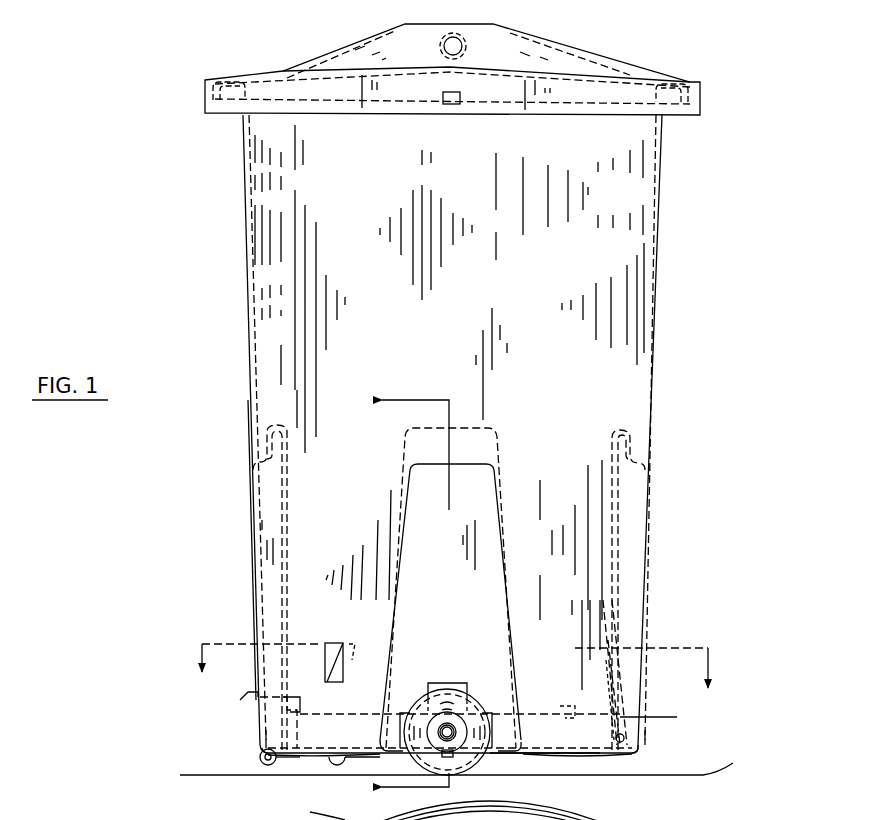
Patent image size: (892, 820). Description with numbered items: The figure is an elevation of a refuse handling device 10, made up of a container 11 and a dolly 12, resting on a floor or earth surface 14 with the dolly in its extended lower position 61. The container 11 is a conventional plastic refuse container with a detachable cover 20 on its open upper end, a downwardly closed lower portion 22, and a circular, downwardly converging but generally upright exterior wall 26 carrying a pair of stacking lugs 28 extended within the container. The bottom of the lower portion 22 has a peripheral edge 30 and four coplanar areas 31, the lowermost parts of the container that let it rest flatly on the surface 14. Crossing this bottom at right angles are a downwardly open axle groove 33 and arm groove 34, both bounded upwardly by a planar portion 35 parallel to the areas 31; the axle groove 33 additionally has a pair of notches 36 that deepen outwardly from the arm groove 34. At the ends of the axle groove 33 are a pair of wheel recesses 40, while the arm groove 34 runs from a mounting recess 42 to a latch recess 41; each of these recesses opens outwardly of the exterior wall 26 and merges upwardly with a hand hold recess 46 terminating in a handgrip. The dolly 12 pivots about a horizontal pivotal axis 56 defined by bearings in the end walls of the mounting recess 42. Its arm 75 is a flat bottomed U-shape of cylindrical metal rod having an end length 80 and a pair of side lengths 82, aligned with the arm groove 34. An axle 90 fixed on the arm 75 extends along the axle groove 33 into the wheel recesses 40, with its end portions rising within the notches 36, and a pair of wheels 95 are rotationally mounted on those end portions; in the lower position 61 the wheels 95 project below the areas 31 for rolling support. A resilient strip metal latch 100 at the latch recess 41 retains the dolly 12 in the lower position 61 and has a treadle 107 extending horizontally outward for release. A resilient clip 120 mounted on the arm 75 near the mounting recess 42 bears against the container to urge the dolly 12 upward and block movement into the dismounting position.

The device for handling refuse 10 is at (198, 413).
The container 11 is at (670, 207).
The dolly 12 is at (540, 762).
The floor or earth surface 14 is at (472, 765).
The detachable cover 20 is at (590, 66).
The lower portion 22 is at (645, 735).
The exterior wall 26 is at (250, 538).
The stacking lugs 28 is at (345, 640).
The peripheral edge 30 is at (262, 748).
The coplanar areas 31 is at (348, 752).
The axle groove 33 is at (492, 760).
The arm groove 34 is at (558, 755).
The planar portion 35 is at (460, 702).
The notches 36 is at (452, 687).
The wheel recesses 40 is at (398, 732).
The latch recess 41 is at (278, 724).
The mounting recess 42 is at (618, 679).
The hand hold recess 46 is at (275, 470).
The pivotal axis 56 is at (653, 718).
The lower position 61 is at (283, 766).
The arm 75 is at (322, 762).
The end length 80 is at (262, 762).
The side lengths 82 is at (377, 758).
The axle 90 is at (452, 728).
The wheels 95 is at (460, 770).
The latch 100 is at (305, 702).
The treadle 107 is at (248, 692).
The resilient clip 120 is at (642, 612).